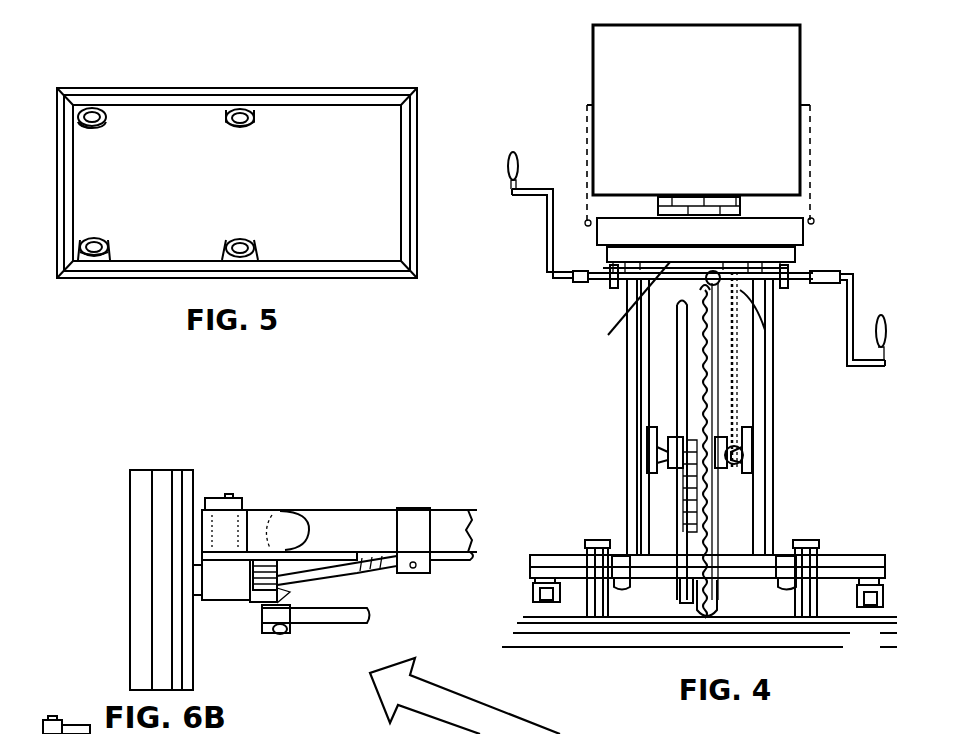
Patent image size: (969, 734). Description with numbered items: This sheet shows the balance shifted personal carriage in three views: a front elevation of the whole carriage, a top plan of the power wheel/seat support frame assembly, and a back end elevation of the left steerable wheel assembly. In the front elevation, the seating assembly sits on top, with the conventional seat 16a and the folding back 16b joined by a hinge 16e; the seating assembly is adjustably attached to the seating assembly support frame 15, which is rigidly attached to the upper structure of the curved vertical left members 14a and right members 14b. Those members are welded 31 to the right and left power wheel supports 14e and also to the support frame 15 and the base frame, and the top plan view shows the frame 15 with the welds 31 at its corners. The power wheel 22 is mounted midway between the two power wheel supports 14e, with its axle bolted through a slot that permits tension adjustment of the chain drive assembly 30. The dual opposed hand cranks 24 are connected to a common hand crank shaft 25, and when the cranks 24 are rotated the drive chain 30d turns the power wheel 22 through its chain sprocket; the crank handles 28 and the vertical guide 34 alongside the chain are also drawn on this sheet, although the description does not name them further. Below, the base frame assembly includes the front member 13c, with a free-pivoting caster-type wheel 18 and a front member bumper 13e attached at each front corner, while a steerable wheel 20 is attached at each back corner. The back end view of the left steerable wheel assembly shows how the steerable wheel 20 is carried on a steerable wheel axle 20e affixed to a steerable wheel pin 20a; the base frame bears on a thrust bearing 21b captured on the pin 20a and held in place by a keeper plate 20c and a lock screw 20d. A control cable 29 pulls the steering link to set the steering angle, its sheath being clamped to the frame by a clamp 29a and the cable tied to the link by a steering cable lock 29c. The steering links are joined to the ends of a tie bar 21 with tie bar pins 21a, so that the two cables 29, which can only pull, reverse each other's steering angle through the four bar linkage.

In FIG. 4, the front member 13c is at (833, 567).
In FIG. 6B, the front member bumper 13e is at (50, 715).
In FIG. 5, the curved vertical left member 14a is at (108, 246).
In FIG. 5, the curved vertical right member 14b is at (103, 108).
In FIG. 4, the curved vertical right member 14b is at (637, 403).
In FIG. 4, the power wheel support 14e is at (650, 430).
In FIG. 5, the seating assembly support frame 15 is at (308, 270).
In FIG. 4, the seating assembly support frame 15 is at (632, 310).
In FIG. 4, the seat 16a is at (787, 233).
In FIG. 4, the folding back 16b is at (783, 83).
In FIG. 4, the hinge 16e is at (712, 193).
In FIG. 4, the free-pivoting caster-type wheel 18 is at (535, 603).
In FIG. 4, the steerable wheel 20 is at (587, 542).
In FIG. 6B, the steerable wheel 20 is at (162, 483).
In FIG. 6B, the steerable wheel pin 20a is at (223, 530).
In FIG. 6B, the keeper plate 20c is at (250, 502).
In FIG. 6B, the lock screw 20d is at (235, 490).
In FIG. 6B, the steerable wheel axle 20e is at (200, 578).
In FIG. 6B, the tie bar 21 is at (318, 625).
In FIG. 6B, the tie bar pin 21a is at (273, 633).
In FIG. 6B, the thrust bearing 21b is at (220, 583).
In FIG. 4, the power wheel 22 is at (708, 494).
In FIG. 4, the dual opposed hand crank 24 is at (573, 280).
In FIG. 4, the hand crank shaft 25 is at (602, 281).
In FIG. 4, the crank handle 28 is at (507, 170).
In FIG. 6B, the control cable 29 is at (345, 570).
In FIG. 6B, the clamp 29a is at (415, 517).
In FIG. 6B, the steering cable lock 29c is at (242, 577).
In FIG. 4, the chain drive assembly 30 is at (740, 292).
In FIG. 4, the drive chain 30d is at (740, 393).
In FIG. 5, the weld 31 is at (80, 127).
In FIG. 4, the guide rod 34 is at (677, 508).